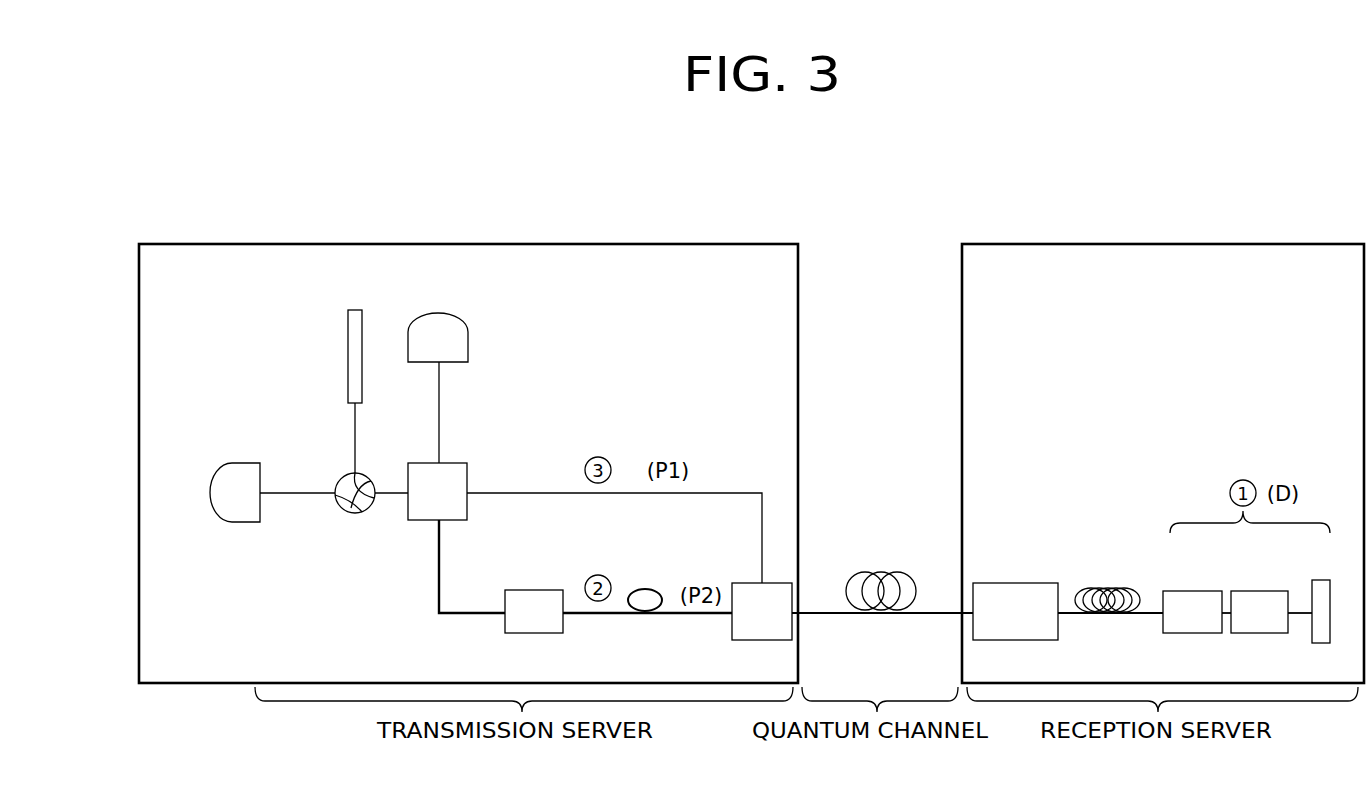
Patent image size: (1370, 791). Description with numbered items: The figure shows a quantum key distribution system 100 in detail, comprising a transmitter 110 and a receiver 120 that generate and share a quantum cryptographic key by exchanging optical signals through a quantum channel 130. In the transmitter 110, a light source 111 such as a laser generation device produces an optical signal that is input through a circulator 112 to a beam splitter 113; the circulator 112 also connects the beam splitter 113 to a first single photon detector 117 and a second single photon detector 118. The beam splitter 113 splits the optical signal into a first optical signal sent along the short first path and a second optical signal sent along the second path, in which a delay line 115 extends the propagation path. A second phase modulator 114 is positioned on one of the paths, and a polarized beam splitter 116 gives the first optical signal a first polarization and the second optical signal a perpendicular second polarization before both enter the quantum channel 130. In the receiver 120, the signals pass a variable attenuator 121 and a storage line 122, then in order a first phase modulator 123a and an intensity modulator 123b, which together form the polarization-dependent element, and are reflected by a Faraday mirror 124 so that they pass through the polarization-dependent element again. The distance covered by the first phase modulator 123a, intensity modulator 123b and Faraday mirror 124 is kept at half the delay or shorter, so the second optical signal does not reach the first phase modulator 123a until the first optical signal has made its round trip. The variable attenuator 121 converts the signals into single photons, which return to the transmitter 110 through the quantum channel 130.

The quantum key distribution system 100 is at (997, 178).
The transmitter 110 is at (648, 244).
The light source 111 is at (355, 310).
The circulator 112 is at (341, 478).
The beam splitter 113 is at (413, 522).
The second phase modulator 114 is at (533, 590).
The delay line 115 is at (646, 612).
The polarized beam splitter 116 is at (742, 583).
The first single photon detector 117 is at (468, 347).
The second single photon detector 118 is at (245, 463).
The receiver 120 is at (1272, 244).
The variable attenuator 121 is at (1015, 583).
The storage line 122 is at (1109, 612).
The first phase modulator 123a is at (1193, 591).
The intensity modulator 123b is at (1261, 591).
The Faraday mirror 124 is at (1320, 643).
The quantum channel 130 is at (881, 613).